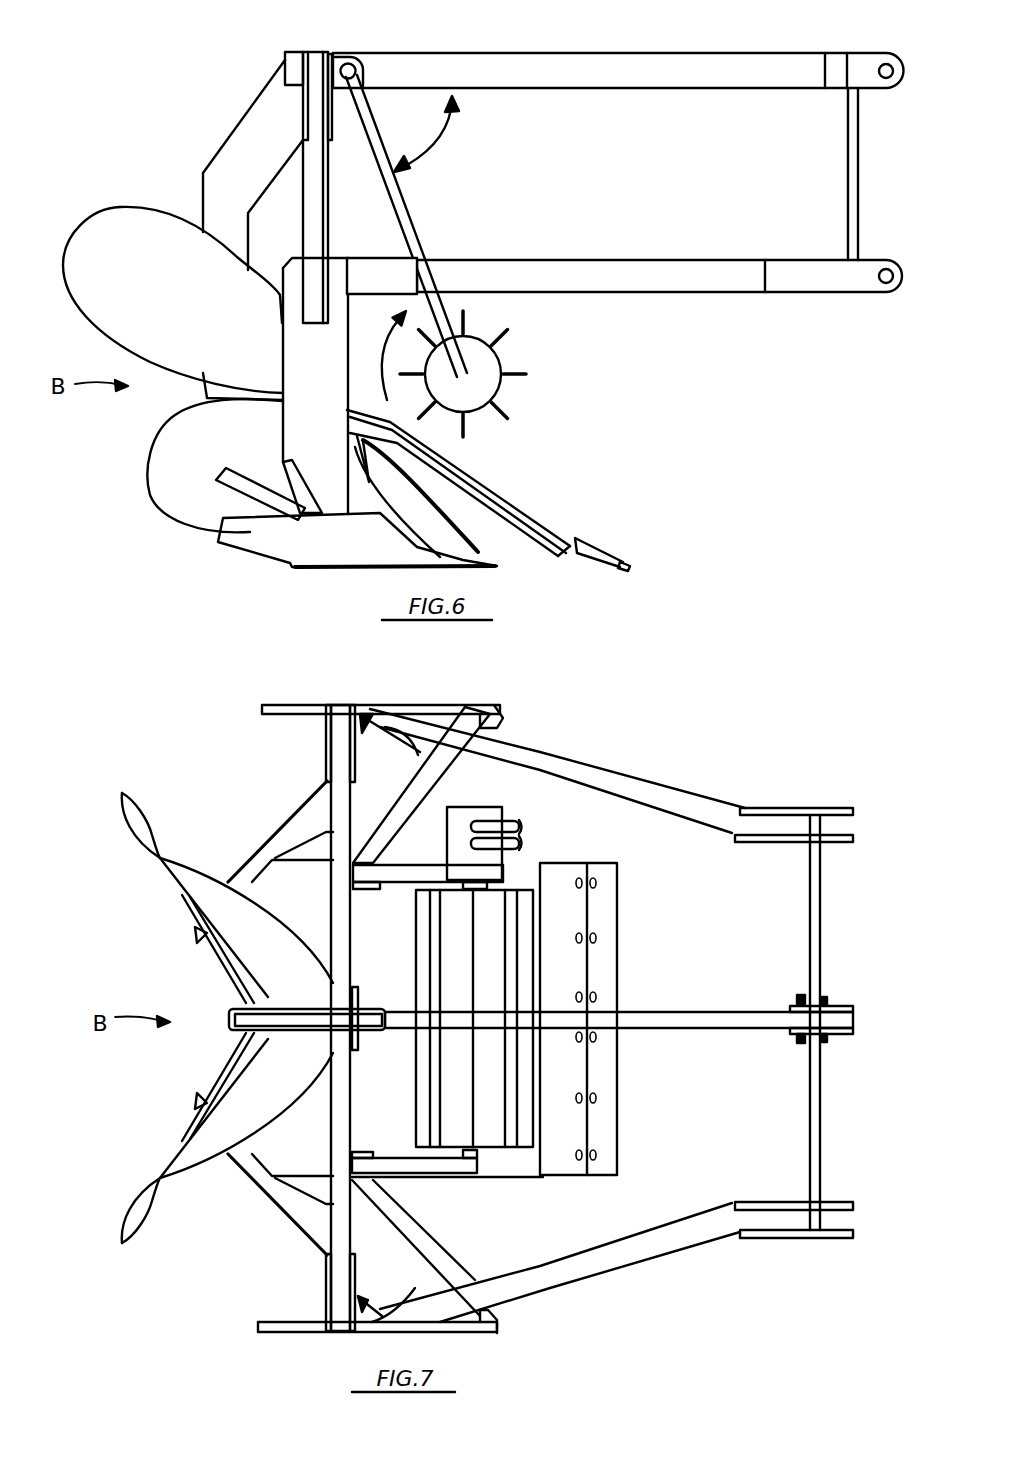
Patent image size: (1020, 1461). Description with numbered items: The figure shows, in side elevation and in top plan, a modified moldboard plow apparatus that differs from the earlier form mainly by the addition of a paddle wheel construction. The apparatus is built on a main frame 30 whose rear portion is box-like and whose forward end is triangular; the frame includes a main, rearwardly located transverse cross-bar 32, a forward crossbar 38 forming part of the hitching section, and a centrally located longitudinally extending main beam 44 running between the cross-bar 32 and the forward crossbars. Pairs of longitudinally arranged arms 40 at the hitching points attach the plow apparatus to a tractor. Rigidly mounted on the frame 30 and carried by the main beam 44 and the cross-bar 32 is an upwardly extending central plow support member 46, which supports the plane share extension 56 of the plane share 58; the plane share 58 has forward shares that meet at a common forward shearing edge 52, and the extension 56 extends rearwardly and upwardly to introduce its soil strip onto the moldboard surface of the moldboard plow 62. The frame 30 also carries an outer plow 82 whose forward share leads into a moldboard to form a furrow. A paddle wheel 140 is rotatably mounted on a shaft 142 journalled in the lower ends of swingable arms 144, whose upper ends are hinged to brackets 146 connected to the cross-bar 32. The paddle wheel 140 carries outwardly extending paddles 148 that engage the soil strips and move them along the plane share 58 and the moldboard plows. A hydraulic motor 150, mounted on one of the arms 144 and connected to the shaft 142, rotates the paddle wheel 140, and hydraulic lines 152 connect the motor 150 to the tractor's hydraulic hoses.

In FIG. 6, the main frame 30 is at (317, 52).
In FIG. 6, the transverse cross-bar 32 is at (317, 137).
In FIG. 7, the transverse cross-bar 32 is at (340, 847).
In FIG. 6, the forward crossbar 38 is at (850, 180).
In FIG. 6, the longitudinally arranged arms 40 is at (873, 58).
In FIG. 6, the main beam 44 is at (643, 72).
In FIG. 6, the central plow support member 46 is at (220, 150).
In FIG. 6, the forward shearing edge 52 is at (633, 565).
In FIG. 6, the plane share extension 56 is at (560, 519).
In FIG. 6, the plane share 58 is at (603, 545).
In FIG. 7, the plane share 58 is at (567, 863).
In FIG. 6, the moldboard plow 62 is at (96, 213).
In FIG. 6, the outer plow 82 is at (150, 450).
In FIG. 6, the paddle wheel 140 is at (480, 387).
In FIG. 7, the paddle wheel 140 is at (492, 1130).
In FIG. 6, the shaft 142 is at (498, 362).
In FIG. 7, the shaft 142 is at (473, 1165).
In FIG. 6, the arm 144 is at (417, 233).
In FIG. 7, the arm 144 is at (397, 880).
In FIG. 6, the bracket 146 is at (356, 62).
In FIG. 6, the paddles 148 is at (467, 427).
In FIG. 7, the paddles 148 is at (525, 1130).
In FIG. 7, the motor 150 is at (473, 812).
In FIG. 7, the hydraulic lines 152 is at (513, 819).